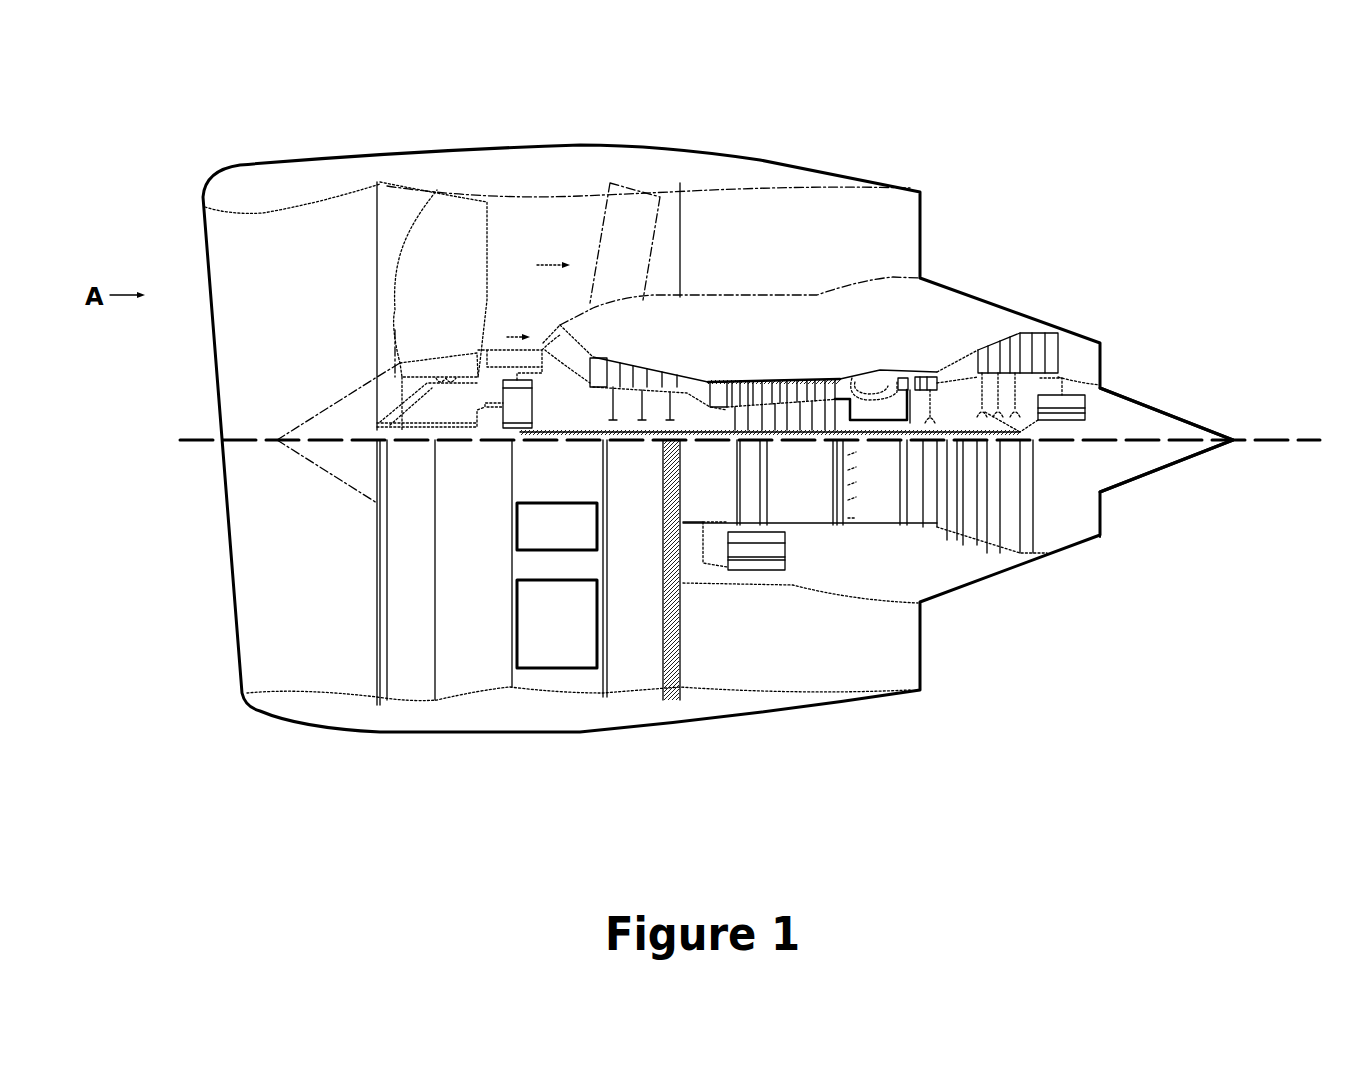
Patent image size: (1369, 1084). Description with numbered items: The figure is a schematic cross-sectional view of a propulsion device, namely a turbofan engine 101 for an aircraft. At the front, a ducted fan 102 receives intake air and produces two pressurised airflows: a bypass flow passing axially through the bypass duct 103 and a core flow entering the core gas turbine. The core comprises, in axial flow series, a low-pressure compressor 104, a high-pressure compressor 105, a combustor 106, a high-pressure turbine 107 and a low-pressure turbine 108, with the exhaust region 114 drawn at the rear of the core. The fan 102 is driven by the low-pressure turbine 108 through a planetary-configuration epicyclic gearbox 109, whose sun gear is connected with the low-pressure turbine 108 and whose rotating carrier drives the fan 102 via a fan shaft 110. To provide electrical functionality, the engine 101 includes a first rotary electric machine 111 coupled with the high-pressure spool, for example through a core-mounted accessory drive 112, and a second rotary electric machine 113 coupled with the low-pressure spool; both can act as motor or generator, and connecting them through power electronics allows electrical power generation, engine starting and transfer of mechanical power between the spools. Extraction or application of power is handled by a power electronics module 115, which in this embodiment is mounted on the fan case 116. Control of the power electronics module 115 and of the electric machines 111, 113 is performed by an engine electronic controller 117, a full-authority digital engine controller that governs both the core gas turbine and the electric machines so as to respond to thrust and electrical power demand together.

The engine 101 is at (277, 82).
The ducted fan 102 is at (463, 316).
The bypass duct 103 is at (567, 239).
The low-pressure compressor 104 is at (646, 350).
The high-pressure compressor 105 is at (769, 366).
The combustor 106 is at (866, 366).
The high-pressure turbine 107 is at (919, 361).
The low-pressure turbine 108 is at (1008, 324).
The epicyclic gearbox 109 is at (550, 413).
The fan shaft 110 is at (443, 428).
The first rotary electric machine 111 is at (785, 562).
The core-mounted accessory drive 112 is at (703, 533).
The second rotary electric machine 113 is at (1060, 393).
The exhaust nozzle 114 is at (1170, 413).
The power electronics module 115 is at (517, 623).
The fan case 116 is at (393, 597).
The engine electronic controller 117 is at (517, 537).